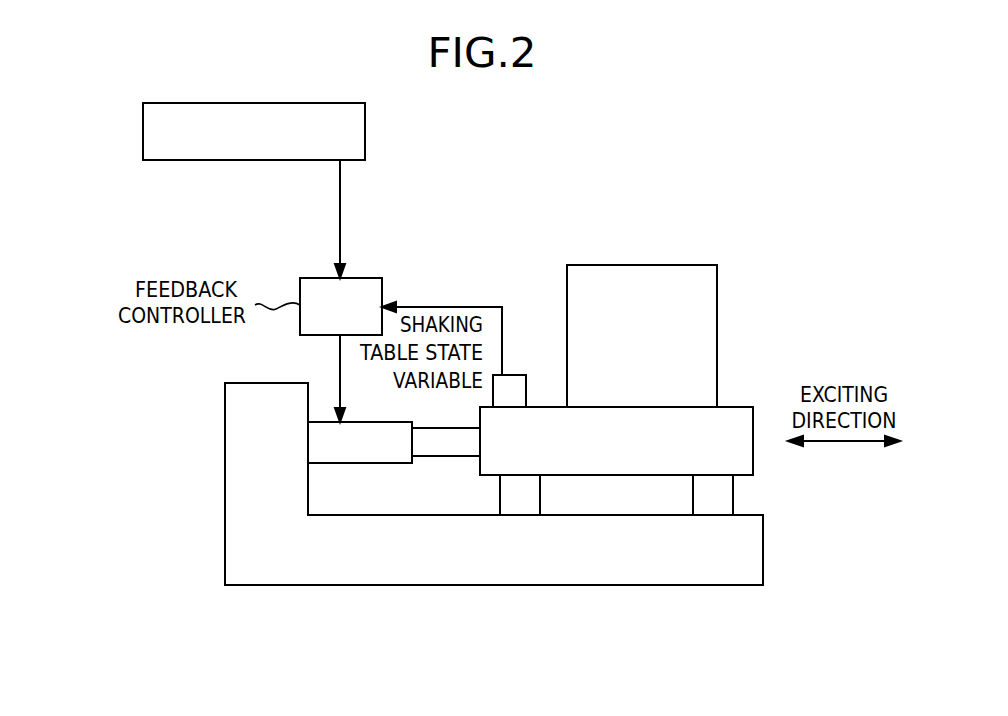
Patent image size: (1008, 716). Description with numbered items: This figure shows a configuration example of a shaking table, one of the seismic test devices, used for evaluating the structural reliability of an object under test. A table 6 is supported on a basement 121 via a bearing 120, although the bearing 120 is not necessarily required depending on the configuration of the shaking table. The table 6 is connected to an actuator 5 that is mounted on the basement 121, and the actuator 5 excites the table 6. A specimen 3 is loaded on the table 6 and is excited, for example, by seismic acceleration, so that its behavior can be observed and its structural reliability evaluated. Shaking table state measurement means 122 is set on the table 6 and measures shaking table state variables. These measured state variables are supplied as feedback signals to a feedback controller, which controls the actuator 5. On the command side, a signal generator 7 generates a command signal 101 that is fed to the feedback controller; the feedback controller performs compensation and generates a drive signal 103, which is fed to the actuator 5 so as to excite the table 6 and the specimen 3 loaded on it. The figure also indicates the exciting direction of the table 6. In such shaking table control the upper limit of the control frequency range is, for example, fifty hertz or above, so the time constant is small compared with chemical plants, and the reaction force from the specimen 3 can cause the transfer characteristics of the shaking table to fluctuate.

The signal generator 7 is at (365, 127).
The command signal 101 is at (240, 219).
The drive signal 103 is at (241, 378).
The shaking table state measurement means 122 is at (512, 374).
The specimen 3 is at (717, 333).
The table 6 is at (753, 452).
The actuator 5 is at (313, 442).
The bearing 120 is at (713, 495).
The basement 121 is at (317, 575).